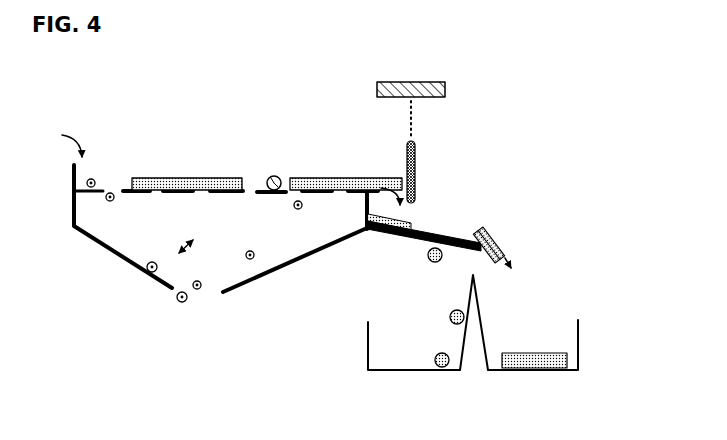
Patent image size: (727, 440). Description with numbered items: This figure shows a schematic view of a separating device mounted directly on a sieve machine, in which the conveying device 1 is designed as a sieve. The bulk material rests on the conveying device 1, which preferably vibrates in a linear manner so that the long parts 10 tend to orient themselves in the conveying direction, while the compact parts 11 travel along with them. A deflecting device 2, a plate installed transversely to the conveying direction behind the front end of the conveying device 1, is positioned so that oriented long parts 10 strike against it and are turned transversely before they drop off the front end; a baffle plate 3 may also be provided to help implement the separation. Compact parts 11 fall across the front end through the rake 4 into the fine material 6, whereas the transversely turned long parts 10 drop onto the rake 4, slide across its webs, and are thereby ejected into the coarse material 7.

The conveying device 1 is at (226, 204).
The long parts 10 is at (173, 180).
The compact parts 11 is at (270, 177).
The deflecting device 2 is at (415, 157).
The baffle plate 3 is at (417, 228).
The rake 4 is at (397, 231).
The fine material 6 is at (387, 353).
The coarse material 7 is at (567, 355).